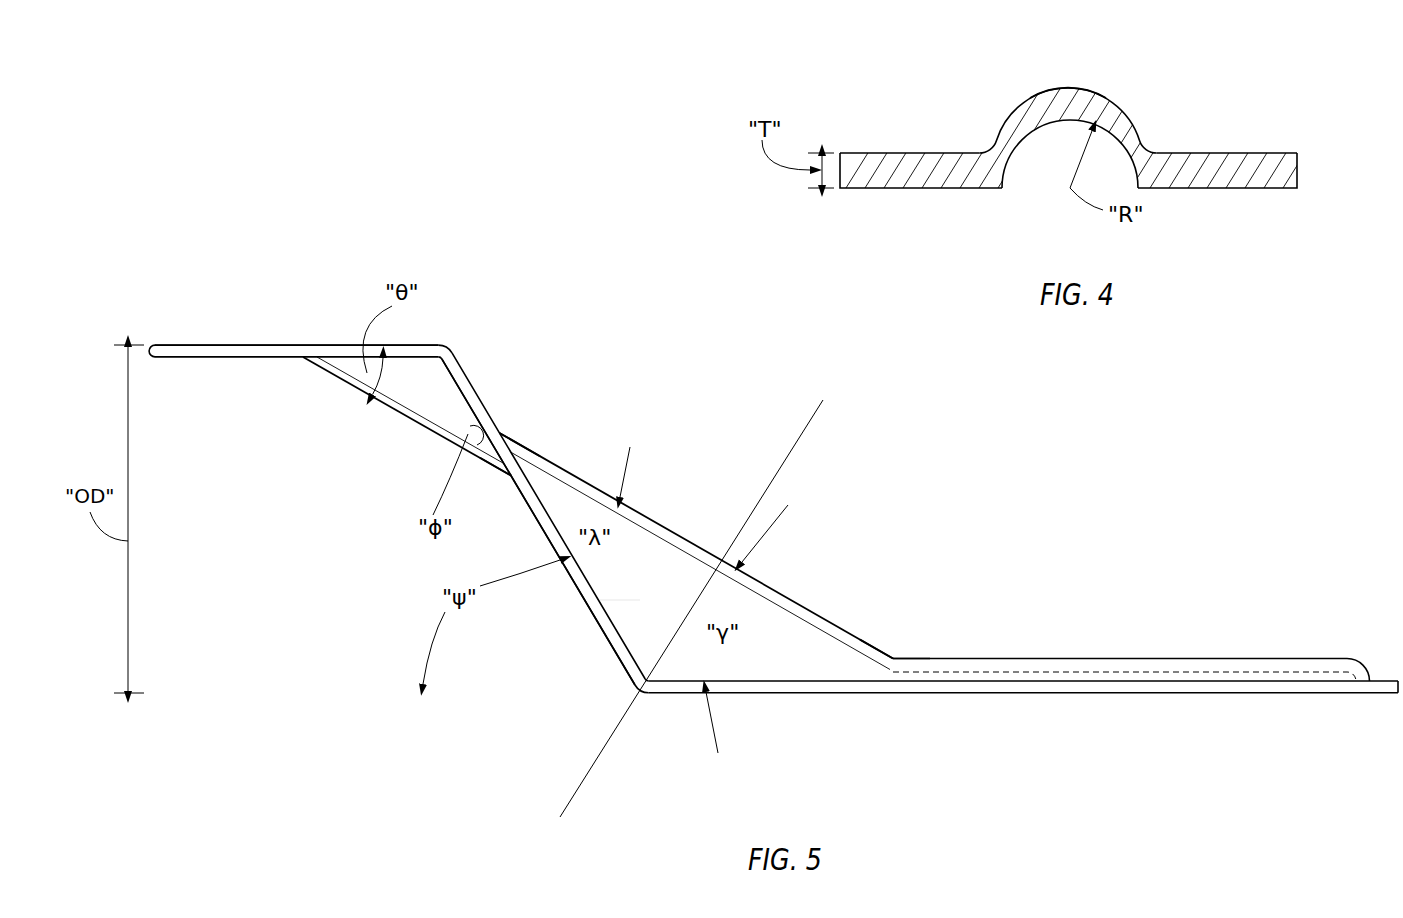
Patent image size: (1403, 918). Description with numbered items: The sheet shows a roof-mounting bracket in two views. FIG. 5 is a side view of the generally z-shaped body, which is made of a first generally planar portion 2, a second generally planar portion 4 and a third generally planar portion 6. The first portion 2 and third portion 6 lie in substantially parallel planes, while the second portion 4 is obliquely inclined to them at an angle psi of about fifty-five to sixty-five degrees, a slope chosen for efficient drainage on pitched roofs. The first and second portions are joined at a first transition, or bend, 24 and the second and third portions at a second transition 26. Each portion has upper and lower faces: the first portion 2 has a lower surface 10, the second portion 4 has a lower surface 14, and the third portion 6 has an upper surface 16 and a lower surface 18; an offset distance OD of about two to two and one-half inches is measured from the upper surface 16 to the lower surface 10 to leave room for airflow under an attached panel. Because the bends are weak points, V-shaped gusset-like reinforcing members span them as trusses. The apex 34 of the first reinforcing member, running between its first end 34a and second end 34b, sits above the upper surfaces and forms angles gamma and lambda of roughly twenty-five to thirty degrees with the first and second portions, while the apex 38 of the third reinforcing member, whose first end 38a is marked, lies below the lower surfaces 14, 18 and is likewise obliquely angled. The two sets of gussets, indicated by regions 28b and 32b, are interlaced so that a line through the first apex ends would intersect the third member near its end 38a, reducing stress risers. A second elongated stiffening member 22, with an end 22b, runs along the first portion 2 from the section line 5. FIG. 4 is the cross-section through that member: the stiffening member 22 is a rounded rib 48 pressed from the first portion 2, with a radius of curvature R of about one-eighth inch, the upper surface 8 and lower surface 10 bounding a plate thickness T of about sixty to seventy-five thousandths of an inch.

In FIG. 5, the first generally planar portion 2 is at (1386, 676).
In FIG. 5, the second generally planar portion 4 is at (492, 405).
In FIG. 5, the section line 5- 5 is at (823, 400).
In FIG. 5, the third generally planar portion 6 is at (301, 304).
In FIG. 4, the upper surface of first generally planar portion 8 is at (1263, 150).
In FIG. 4, the lower surface of first generally planar portion 10 is at (1268, 192).
In FIG. 5, the lower surface of first generally planar portion 10 is at (1371, 698).
In FIG. 5, the lower surface of second generally planar portion 14 is at (597, 634).
In FIG. 5, the upper surface of third generally planar portion 16 is at (246, 339).
In FIG. 5, the lower surface of third generally planar portion 18 is at (213, 359).
In FIG. 4, the second elongated stiffening member 22 is at (1180, 90).
In FIG. 5, the second elongated stiffening member 22 is at (1093, 667).
In FIG. 5, the rib end 22b is at (895, 673).
In FIG. 5, the first transition (bend) 24 is at (637, 683).
In FIG. 5, the second transition (bend) 26 is at (445, 351).
In FIG. 5, the lower surface region 28b is at (665, 605).
In FIG. 5, the upper surface region 32b is at (444, 394).
In FIG. 5, the apex of first reinforcing member 34 is at (667, 528).
In FIG. 5, the first end of apex 34a is at (920, 674).
In FIG. 5, the second end of apex 34b is at (508, 434).
In FIG. 5, the apex of third reinforcing member 38 is at (407, 433).
In FIG. 5, the first end of apex 38a is at (508, 472).
In FIG. 4, the rounded rib 48 is at (1000, 122).